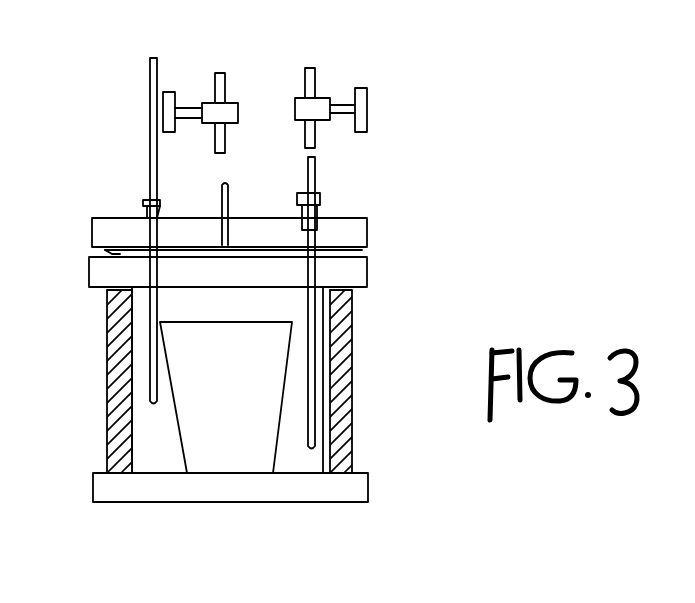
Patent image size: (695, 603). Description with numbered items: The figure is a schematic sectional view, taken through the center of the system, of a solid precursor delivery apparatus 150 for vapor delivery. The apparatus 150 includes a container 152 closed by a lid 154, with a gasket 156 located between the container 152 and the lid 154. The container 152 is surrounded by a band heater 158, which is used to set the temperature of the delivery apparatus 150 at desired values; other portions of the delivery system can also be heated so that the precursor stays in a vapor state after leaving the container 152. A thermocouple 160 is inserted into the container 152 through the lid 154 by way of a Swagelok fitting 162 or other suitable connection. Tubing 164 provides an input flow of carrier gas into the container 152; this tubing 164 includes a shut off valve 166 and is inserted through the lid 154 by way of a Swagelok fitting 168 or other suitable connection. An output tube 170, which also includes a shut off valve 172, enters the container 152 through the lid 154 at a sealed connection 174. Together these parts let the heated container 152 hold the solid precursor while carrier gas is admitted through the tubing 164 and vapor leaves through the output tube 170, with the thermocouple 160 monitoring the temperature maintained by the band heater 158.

The solid precursor delivery apparatus 150 is at (273, 510).
The container 152 is at (367, 265).
The lid 154 is at (92, 218).
The gasket 156 is at (107, 251).
The band heater 158 is at (352, 344).
The thermocouple 160 is at (150, 75).
The fitting 162 is at (150, 199).
The tubing 164 is at (312, 68).
The shut off valve 166 is at (338, 100).
The fitting 168 is at (320, 195).
The output tube 170 is at (220, 73).
The shut off valve 172 is at (238, 108).
The sealed connection 174 is at (222, 216).